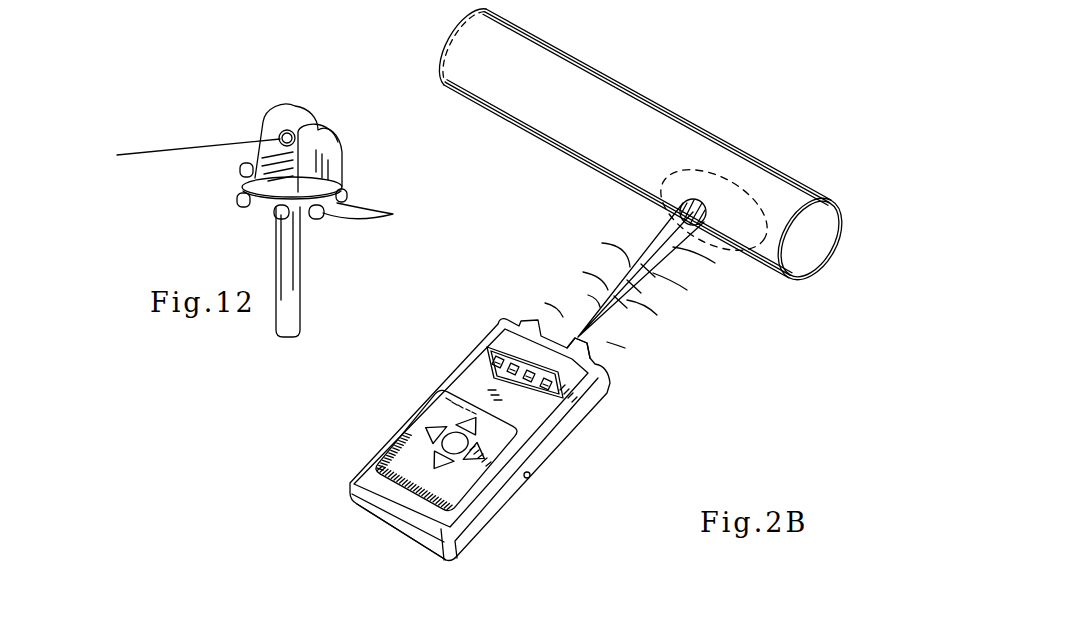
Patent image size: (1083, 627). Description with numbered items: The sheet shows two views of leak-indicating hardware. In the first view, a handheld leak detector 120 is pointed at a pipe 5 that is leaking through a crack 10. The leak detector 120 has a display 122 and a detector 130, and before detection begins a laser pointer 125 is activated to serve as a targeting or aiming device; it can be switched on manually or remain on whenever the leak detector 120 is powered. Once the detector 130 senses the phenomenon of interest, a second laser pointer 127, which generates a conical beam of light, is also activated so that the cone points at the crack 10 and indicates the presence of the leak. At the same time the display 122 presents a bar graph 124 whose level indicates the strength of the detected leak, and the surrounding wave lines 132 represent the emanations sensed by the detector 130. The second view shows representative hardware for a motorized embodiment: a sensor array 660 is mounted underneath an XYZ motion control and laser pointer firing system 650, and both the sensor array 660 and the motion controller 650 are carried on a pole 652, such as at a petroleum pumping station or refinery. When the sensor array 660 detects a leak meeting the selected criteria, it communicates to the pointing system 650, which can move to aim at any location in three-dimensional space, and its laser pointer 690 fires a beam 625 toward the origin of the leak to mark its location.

In FIG. 2B, the pipe 5 is at (547, 60).
In FIG. 2B, the crack 10 is at (700, 208).
In FIG. 2B, the leak detector 120 is at (423, 424).
In FIG. 2B, the display 122 is at (487, 327).
In FIG. 2B, the bar graph 124 is at (577, 397).
In FIG. 2B, the laser pointer 125 is at (613, 277).
In FIG. 2B, the second laser pointer 127 is at (645, 243).
In FIG. 2B, the detector 130 is at (636, 389).
In FIG. 2B, the signal wavefronts 132 is at (613, 312).
In FIG. 2B, the sensor array 660 is at (500, 264).
In FIG. 12, the XYZ motion control and laser pointer firing system 650 is at (328, 112).
In FIG. 12, the laser pointer 690 is at (280, 133).
In FIG. 12, the beam 625 is at (202, 150).
In FIG. 12, the pole 652 is at (292, 300).